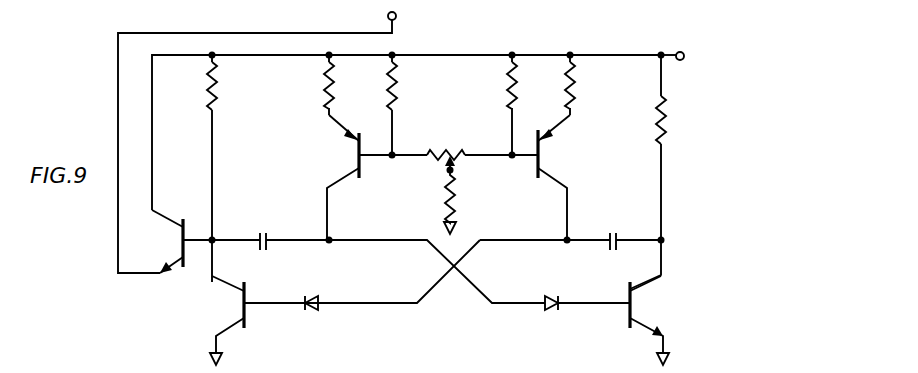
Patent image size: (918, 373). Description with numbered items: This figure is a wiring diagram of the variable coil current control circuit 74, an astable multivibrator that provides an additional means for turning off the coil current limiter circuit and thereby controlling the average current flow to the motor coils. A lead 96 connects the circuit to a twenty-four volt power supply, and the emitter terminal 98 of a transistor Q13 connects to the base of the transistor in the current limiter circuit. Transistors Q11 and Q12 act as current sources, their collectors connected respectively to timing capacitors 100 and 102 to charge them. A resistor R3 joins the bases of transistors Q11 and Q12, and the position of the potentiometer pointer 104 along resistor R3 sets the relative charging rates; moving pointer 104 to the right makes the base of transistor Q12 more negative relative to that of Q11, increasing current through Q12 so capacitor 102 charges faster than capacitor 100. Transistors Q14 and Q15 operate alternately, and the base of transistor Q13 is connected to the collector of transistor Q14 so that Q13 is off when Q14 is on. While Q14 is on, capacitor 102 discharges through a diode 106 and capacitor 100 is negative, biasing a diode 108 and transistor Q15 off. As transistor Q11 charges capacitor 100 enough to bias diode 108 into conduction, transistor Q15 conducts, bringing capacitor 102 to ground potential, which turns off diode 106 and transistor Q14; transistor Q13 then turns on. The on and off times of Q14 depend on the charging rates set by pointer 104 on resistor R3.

The variable coil current control circuit 74 is at (682, 203).
The lead 96 is at (680, 60).
The emitter terminal 98 is at (396, 15).
The transistor Q11 is at (355, 159).
The transistor Q12 is at (541, 158).
The transistor Q13 is at (181, 249).
The transistor Q14 is at (242, 318).
The transistor Q15 is at (633, 306).
The resistor R3 is at (450, 150).
The timing capacitor 100 is at (266, 232).
The timing capacitor 102 is at (618, 232).
The potentiometer pointer 104 is at (454, 170).
The diode 106 is at (312, 297).
The diode 108 is at (547, 296).